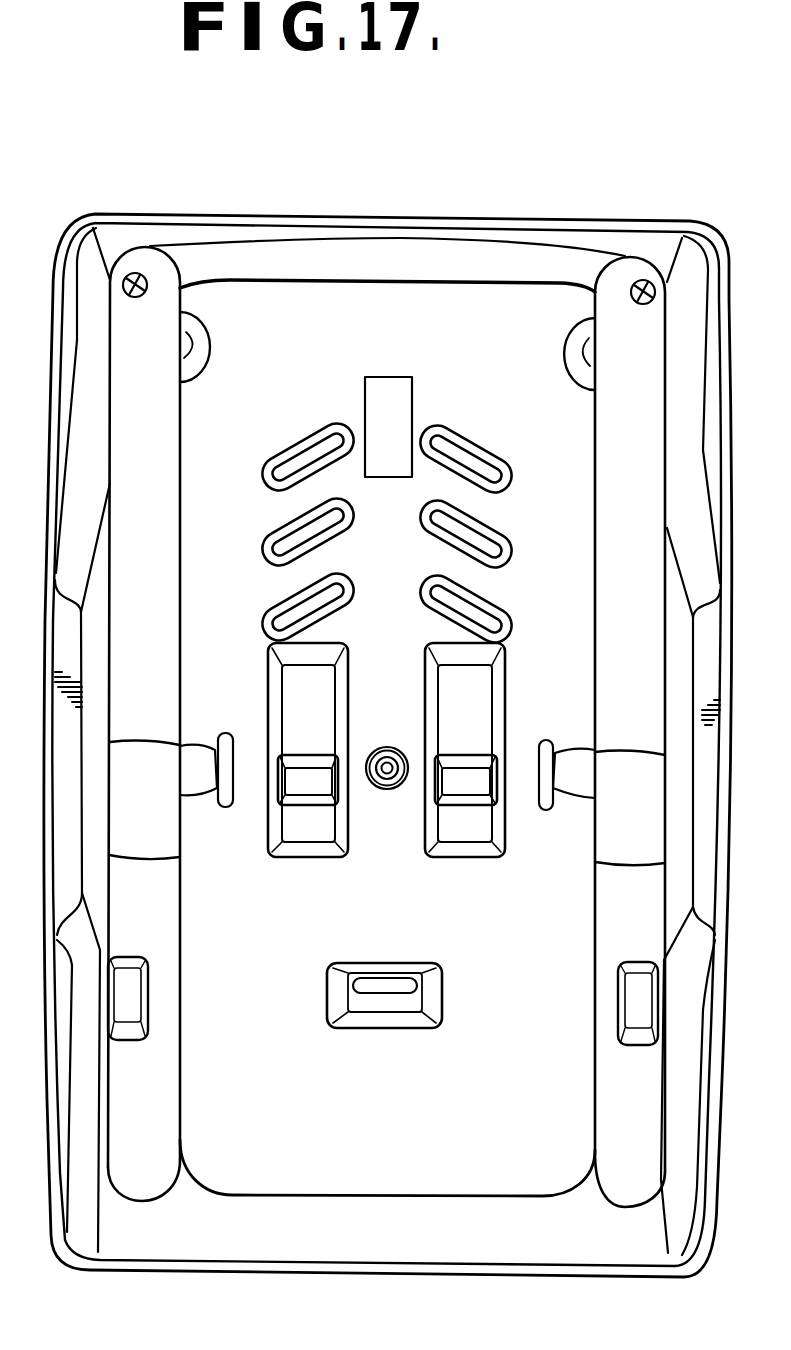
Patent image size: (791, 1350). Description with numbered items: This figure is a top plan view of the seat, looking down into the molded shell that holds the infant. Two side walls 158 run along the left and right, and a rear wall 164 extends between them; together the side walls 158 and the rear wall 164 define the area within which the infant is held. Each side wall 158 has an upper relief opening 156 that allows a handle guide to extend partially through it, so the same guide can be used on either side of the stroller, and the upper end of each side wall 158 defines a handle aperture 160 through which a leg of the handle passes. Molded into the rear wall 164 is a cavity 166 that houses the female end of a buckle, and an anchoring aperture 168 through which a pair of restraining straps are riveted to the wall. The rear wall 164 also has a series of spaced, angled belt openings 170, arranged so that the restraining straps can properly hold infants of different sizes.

The upper relief opening 156 is at (196, 328).
The side wall 158 is at (178, 262).
The handle aperture 160 is at (140, 296).
The rear wall 164 is at (404, 253).
The cavity 166 is at (360, 1016).
The anchoring aperture 168 is at (378, 788).
The belt openings 170 is at (288, 448).